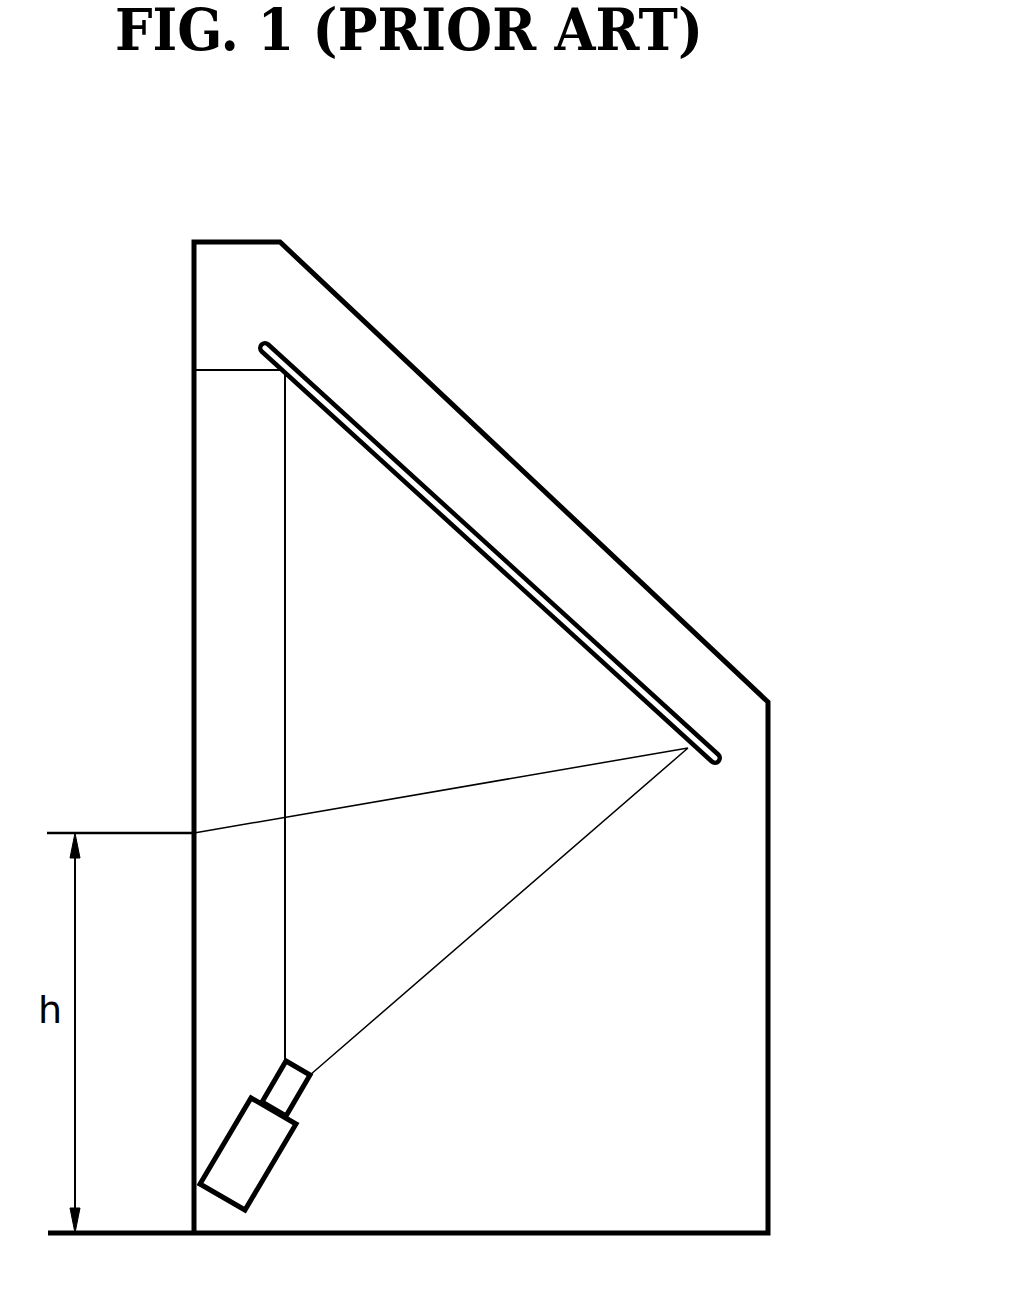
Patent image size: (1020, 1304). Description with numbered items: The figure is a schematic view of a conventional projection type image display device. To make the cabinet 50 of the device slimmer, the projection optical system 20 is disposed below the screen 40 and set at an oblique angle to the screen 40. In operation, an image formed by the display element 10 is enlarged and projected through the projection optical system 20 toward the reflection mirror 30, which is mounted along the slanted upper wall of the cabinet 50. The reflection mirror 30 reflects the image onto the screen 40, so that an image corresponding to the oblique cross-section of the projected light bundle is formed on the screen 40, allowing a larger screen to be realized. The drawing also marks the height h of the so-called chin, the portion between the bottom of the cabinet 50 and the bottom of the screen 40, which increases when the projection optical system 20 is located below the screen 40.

The display element 10 is at (242, 1110).
The projection optical system 20 is at (297, 1100).
The reflection mirror 30 is at (532, 583).
The screen 40 is at (193, 613).
The cabinet 50 is at (770, 953).